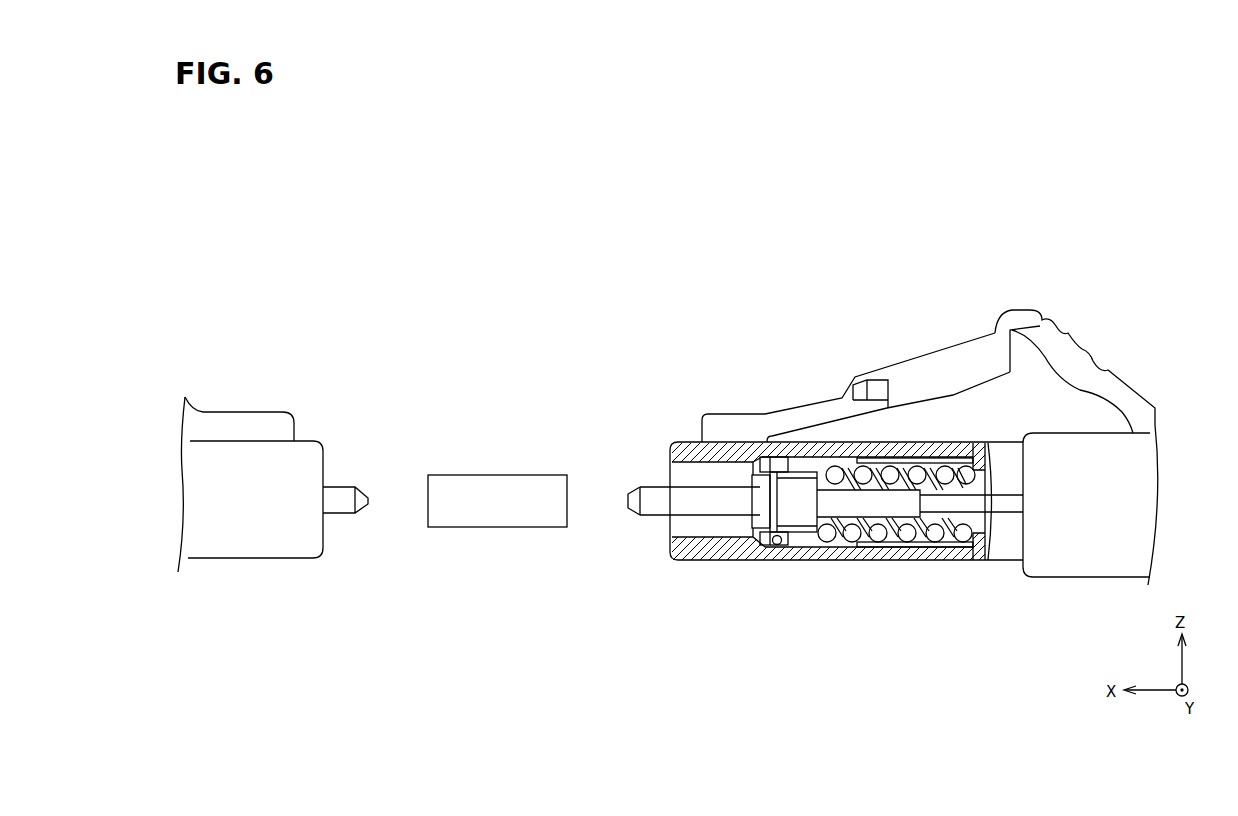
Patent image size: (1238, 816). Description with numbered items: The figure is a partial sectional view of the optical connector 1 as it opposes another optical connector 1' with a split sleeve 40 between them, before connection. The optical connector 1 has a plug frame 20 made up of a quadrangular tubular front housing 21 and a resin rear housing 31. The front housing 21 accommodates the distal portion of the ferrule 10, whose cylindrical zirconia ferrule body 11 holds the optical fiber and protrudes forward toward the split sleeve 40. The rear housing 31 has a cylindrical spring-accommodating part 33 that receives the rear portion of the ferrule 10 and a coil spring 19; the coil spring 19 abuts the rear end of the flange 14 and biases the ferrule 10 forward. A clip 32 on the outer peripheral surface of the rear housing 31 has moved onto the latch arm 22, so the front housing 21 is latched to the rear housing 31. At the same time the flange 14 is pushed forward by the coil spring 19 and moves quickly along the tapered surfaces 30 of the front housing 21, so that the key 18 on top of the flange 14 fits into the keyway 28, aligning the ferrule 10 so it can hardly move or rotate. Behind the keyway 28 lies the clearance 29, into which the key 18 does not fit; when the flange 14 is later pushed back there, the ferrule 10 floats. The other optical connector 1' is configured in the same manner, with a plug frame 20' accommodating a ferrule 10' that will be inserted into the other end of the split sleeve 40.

The other optical connector 1' is at (273, 437).
The plug frame 20' is at (253, 457).
The ferrule 10' is at (345, 532).
The split sleeve 40 is at (531, 485).
The optical connector 1 is at (893, 463).
The plug frame 20 is at (846, 508).
The front housing 21 is at (697, 563).
The latch arm 22 is at (955, 362).
The clip 32 is at (1072, 335).
The keyway 28 is at (757, 450).
The key 18 is at (767, 450).
The ferrule 10 is at (825, 488).
The ferrule body 11 is at (665, 509).
The flange 14 is at (805, 541).
The tapered surfaces 30 is at (777, 551).
The clearance 29 is at (789, 552).
The spring-accommodating part 33 is at (887, 553).
The coil spring 19 is at (936, 548).
The rear housing 31 is at (1087, 572).